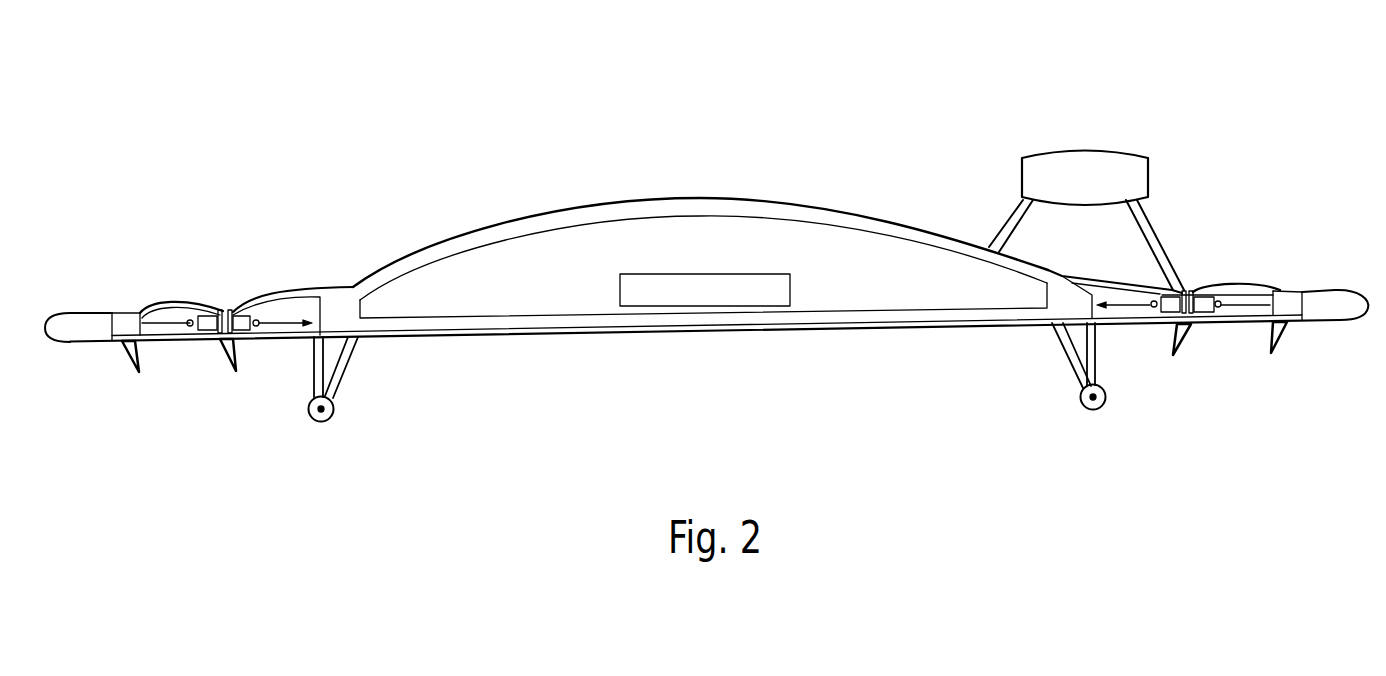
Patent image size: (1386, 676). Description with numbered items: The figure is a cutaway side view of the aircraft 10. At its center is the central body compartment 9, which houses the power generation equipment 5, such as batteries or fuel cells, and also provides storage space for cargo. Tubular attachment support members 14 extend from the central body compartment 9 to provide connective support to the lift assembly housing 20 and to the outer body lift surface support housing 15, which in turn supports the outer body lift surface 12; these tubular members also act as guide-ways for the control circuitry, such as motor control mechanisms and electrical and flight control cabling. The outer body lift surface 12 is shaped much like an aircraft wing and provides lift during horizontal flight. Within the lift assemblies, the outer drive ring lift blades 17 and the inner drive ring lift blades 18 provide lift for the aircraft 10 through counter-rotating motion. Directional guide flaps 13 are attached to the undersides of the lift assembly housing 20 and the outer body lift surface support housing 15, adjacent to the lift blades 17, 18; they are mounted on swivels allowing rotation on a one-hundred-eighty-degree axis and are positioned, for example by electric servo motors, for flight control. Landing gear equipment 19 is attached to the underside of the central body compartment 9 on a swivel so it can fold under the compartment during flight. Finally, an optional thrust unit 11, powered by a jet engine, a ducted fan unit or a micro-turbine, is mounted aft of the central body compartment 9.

The power generation equipment 5 is at (747, 273).
The central body compartment 9 is at (643, 207).
The aircraft 10 is at (900, 108).
The thrust unit 11 is at (1032, 193).
The outer body lift surface 12 is at (83, 313).
The directional guide flaps 13 is at (131, 363).
The tubular attachment support members 14 is at (197, 299).
The outer body lift surface support housing 15 is at (122, 320).
The outer drive ring lift blades 17 is at (183, 324).
The inner drive ring lift blades 18 is at (336, 361).
The landing gear equipment 19 is at (1070, 365).
The lift assembly housing 20 is at (245, 336).